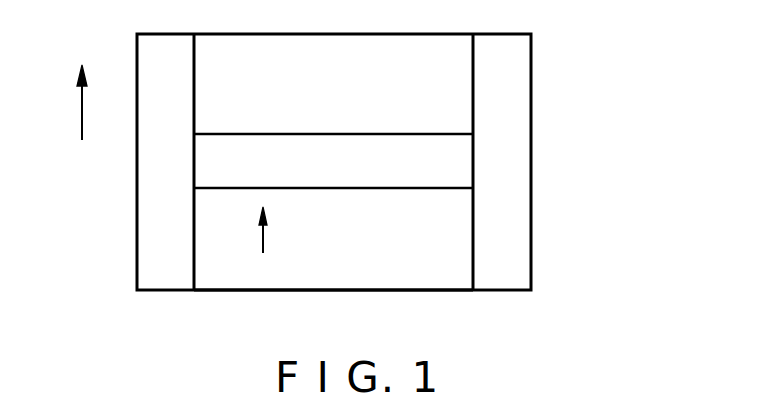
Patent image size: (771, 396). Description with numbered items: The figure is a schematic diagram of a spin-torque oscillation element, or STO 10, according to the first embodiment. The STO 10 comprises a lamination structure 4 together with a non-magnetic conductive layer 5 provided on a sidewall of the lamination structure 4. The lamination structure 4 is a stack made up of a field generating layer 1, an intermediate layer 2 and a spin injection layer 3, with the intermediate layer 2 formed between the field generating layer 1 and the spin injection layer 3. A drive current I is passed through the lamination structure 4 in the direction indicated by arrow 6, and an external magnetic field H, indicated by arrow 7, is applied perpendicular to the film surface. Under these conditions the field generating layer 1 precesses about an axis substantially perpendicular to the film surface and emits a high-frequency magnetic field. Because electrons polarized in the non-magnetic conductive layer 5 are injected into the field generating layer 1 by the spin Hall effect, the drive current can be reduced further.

The field generating layer 1 is at (443, 100).
The intermediate layer 2 is at (443, 172).
The spin injection layer 3 is at (396, 258).
The lamination structure 4 is at (417, 183).
The non-magnetic conductive layer 5 is at (513, 53).
The arrow 6 is at (82, 110).
The arrow 7 is at (264, 236).
The spin-torque oscillation element 10 is at (420, 162).